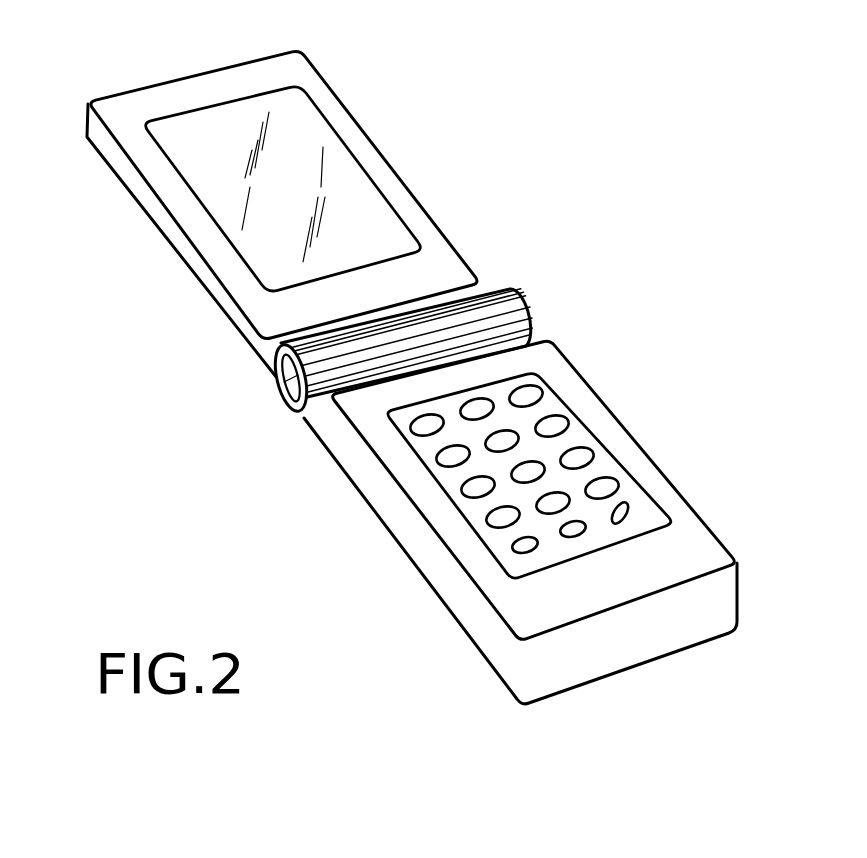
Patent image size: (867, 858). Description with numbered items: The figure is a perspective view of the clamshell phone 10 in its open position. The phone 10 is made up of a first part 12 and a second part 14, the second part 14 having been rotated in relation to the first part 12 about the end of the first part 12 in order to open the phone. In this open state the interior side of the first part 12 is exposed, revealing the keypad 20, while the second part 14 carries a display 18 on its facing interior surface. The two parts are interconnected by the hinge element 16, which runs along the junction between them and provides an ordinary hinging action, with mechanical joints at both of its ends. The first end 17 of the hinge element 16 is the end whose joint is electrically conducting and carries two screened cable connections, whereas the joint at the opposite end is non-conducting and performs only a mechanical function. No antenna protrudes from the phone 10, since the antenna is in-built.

The phone 10 is at (617, 206).
The first part 12 is at (666, 476).
The second part 14 is at (356, 111).
The hinge element 16 is at (482, 312).
The first end 17 is at (283, 391).
The display screen 18 is at (365, 227).
The keypad 20 is at (578, 457).